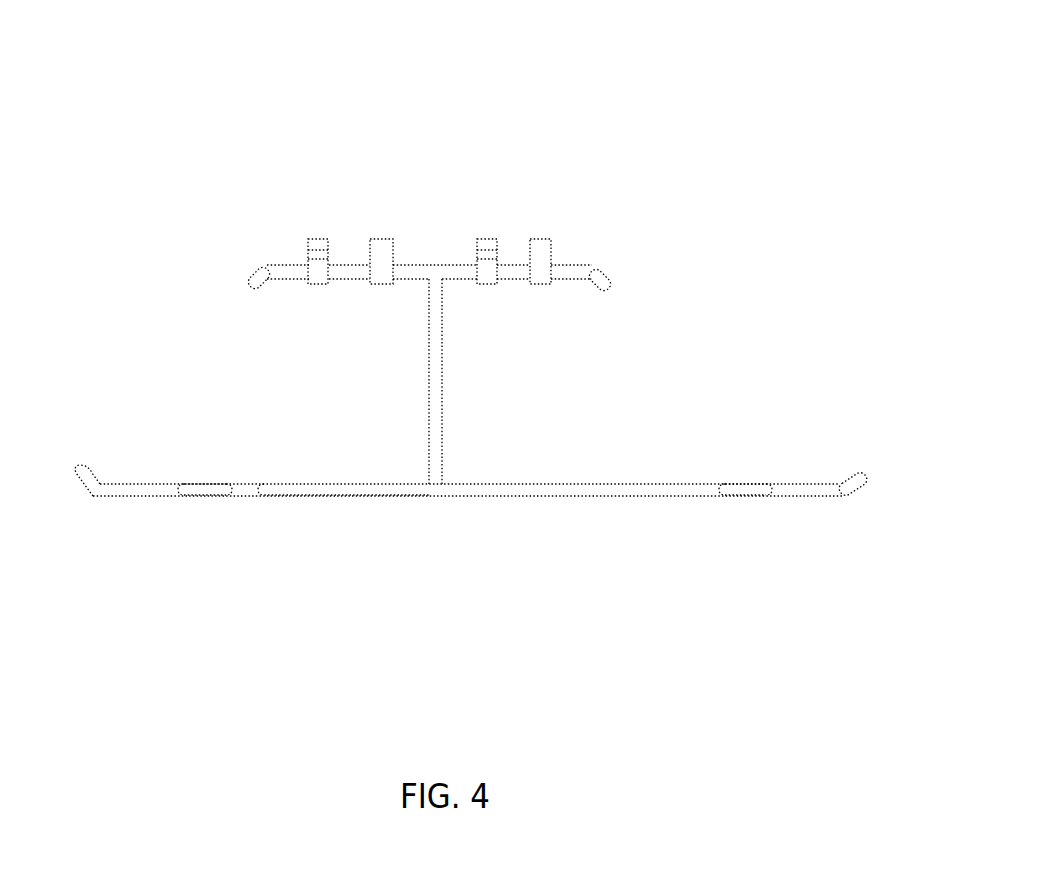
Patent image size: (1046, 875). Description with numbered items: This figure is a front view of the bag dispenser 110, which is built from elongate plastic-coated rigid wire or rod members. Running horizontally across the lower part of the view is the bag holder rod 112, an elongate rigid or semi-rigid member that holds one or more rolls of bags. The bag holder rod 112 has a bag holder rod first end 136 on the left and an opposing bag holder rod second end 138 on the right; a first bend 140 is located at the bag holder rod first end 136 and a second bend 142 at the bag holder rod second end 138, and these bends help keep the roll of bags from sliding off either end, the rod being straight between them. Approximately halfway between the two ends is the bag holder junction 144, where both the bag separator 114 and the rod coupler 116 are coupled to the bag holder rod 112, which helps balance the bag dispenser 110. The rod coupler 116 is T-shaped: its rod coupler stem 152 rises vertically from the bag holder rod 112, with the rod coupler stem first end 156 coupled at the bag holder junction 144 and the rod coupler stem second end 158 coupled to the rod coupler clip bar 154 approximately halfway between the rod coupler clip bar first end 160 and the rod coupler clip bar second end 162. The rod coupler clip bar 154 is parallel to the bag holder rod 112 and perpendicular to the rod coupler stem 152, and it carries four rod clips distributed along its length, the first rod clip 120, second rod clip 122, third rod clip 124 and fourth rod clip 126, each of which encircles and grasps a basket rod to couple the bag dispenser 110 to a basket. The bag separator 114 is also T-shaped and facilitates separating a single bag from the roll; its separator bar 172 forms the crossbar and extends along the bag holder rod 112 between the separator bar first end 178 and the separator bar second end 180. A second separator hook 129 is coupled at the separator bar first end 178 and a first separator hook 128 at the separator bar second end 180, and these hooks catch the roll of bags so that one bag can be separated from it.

The bag dispenser 110 is at (546, 114).
The bag holder rod 112 is at (164, 484).
The bag separator 114 is at (545, 584).
The rod coupler 116 is at (648, 308).
The first rod clip 120 is at (540, 246).
The second rod clip 122 is at (487, 243).
The third rod clip 124 is at (382, 246).
The fourth rod clip 126 is at (316, 243).
The first separator hook 128 is at (738, 497).
The second separator hook 129 is at (203, 488).
The bag holder rod first end 136 is at (80, 476).
The bag holder rod second end 138 is at (861, 472).
The first bend 140 is at (98, 484).
The second bend 142 is at (838, 490).
The bag holder junction 144 is at (432, 497).
The rod coupler stem 152 is at (434, 368).
The rod coupler clip bar 154 is at (433, 270).
The rod coupler stem first end 156 is at (436, 483).
The rod coupler stem second end 158 is at (435, 288).
The rod coupler clip bar first end 160 is at (256, 272).
The rod coupler clip bar second end 162 is at (598, 276).
The separator bar 172 is at (355, 497).
The separator bar first end 178 is at (243, 484).
The separator bar second end 180 is at (711, 484).